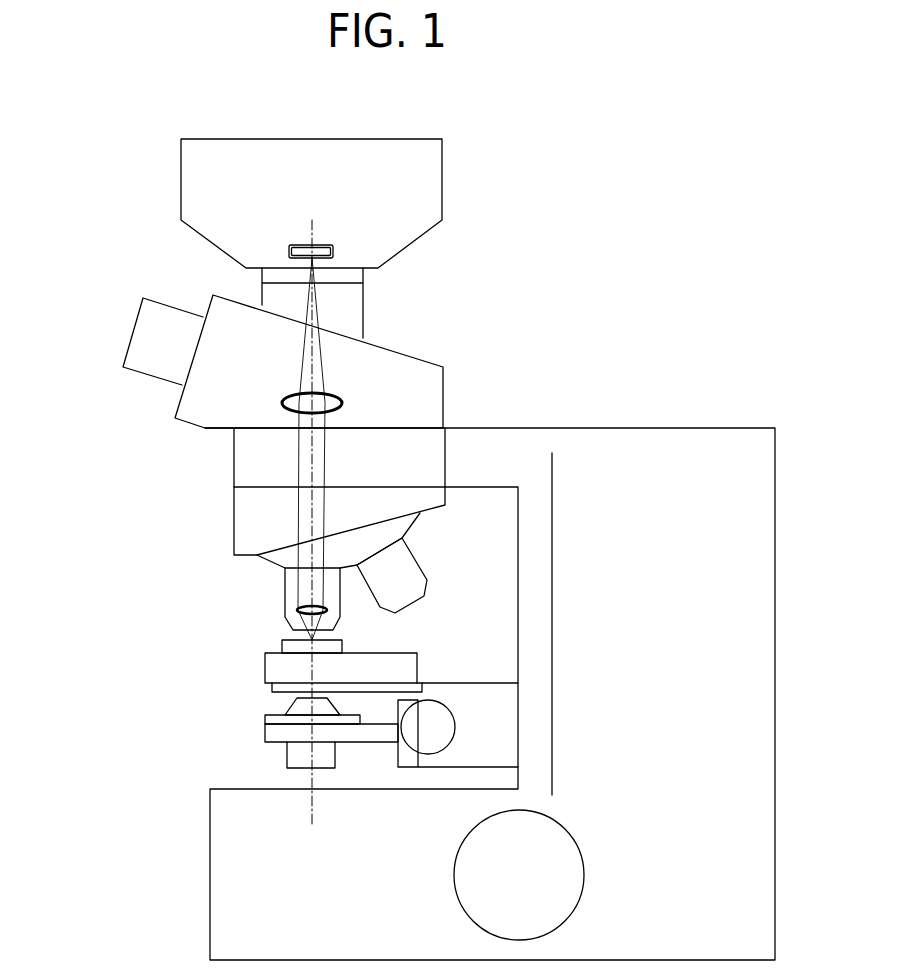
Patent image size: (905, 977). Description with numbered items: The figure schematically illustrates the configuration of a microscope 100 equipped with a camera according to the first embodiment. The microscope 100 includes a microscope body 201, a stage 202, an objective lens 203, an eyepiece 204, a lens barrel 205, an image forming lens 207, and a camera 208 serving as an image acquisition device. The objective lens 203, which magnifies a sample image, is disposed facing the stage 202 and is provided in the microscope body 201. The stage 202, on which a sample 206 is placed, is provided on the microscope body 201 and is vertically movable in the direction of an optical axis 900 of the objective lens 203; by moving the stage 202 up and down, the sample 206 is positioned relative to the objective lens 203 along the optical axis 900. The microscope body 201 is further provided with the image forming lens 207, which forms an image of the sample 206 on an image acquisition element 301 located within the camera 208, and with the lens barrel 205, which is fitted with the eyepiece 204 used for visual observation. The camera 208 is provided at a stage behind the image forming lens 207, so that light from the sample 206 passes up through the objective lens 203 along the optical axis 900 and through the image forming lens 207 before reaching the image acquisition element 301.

The microscope 100 is at (680, 217).
The microscope body 201 is at (648, 428).
The stage 202 is at (265, 668).
The objective lens 203 is at (285, 592).
The eyepiece 204 is at (133, 332).
The lens barrel 205 is at (177, 402).
The sample 206 is at (282, 648).
The image forming lens 207 is at (342, 403).
The camera 208 is at (442, 176).
The image acquisition element 301 is at (322, 245).
The optical axis 900 is at (303, 392).